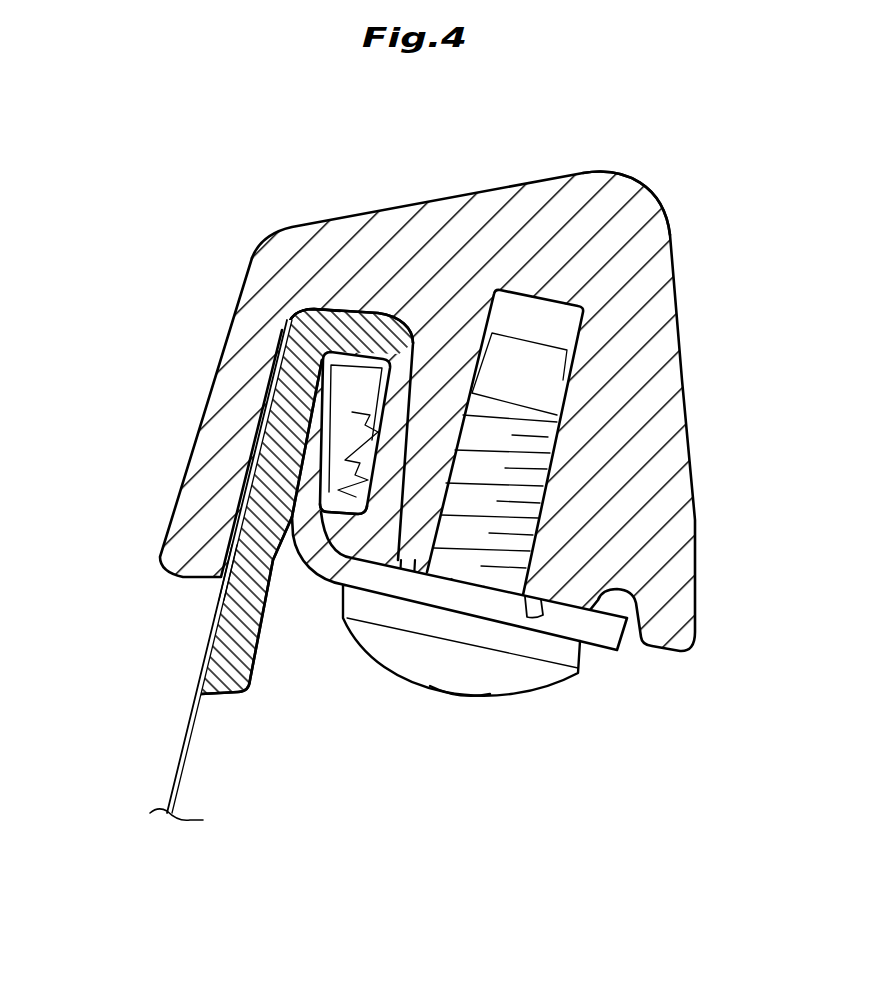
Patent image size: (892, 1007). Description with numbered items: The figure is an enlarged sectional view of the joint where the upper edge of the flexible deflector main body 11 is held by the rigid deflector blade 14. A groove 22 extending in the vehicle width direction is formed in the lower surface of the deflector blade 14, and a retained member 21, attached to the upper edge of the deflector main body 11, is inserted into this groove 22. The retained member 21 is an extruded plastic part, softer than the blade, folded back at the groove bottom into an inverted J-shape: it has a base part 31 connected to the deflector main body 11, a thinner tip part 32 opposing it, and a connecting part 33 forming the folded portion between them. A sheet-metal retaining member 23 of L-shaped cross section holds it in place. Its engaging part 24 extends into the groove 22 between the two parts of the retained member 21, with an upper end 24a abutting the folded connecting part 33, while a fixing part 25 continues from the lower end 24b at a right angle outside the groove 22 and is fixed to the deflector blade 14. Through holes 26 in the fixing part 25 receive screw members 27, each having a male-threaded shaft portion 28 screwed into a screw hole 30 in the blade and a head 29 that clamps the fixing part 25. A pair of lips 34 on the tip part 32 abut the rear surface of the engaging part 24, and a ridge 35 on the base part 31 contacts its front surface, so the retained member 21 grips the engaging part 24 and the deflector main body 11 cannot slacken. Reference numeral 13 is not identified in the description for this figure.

The deflector main body 11 is at (177, 770).
The housing body 13 is at (681, 316).
The deflector blade 14 is at (646, 214).
The retained member 21 is at (210, 650).
The groove 22 is at (402, 348).
The retaining member 23 is at (326, 582).
The engaging part 24 is at (303, 505).
The upper end of engaging part 24a is at (350, 310).
The lower end of engaging part 24b is at (297, 563).
The fixing part 25 is at (598, 636).
The through hole 26 is at (526, 617).
The screw member 27 is at (473, 700).
The shaft portion 28 is at (527, 492).
The head 29 is at (410, 660).
The screw hole 30 is at (494, 313).
The base part 31 is at (233, 601).
The tip part 32 is at (357, 522).
The connecting part 33 is at (327, 309).
The lips 34 is at (347, 360).
The ridge 35 is at (310, 410).